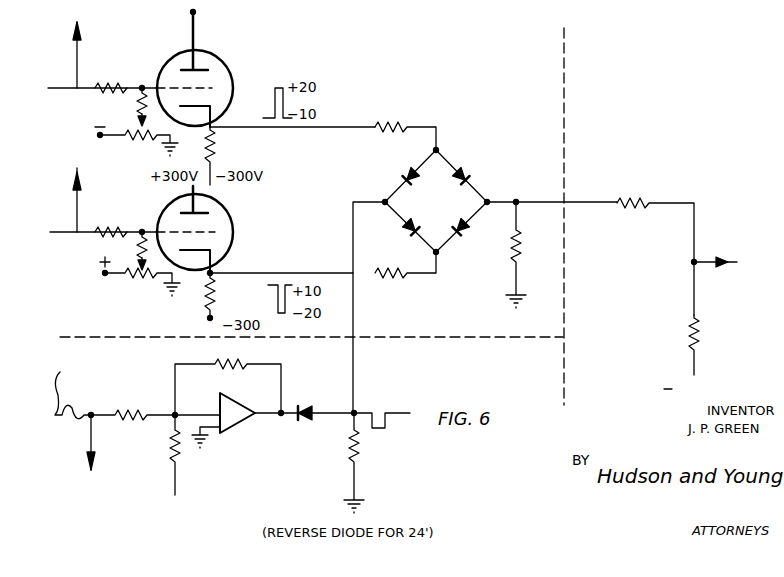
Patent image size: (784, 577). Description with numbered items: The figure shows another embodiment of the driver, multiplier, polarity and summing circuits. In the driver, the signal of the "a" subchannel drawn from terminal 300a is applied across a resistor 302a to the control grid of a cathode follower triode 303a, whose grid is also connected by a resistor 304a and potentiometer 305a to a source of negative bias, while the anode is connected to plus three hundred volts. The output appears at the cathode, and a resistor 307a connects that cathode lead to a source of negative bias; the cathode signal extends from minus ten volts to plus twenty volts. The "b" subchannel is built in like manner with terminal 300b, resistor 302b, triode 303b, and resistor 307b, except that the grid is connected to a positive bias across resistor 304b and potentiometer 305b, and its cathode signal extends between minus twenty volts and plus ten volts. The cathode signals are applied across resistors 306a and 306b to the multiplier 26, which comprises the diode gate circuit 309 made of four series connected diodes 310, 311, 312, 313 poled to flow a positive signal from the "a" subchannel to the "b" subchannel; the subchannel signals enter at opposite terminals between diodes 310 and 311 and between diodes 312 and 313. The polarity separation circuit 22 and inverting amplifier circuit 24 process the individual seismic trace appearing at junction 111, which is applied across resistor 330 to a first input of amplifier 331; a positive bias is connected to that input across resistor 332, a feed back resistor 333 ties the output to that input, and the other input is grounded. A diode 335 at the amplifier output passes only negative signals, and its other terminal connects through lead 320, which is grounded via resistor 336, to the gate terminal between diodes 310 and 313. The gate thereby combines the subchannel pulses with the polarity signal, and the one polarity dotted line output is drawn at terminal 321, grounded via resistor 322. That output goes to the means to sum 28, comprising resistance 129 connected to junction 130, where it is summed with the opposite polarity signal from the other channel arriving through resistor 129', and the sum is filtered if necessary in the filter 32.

The terminal 300a is at (80, 88).
The resistor 302a is at (110, 85).
The triode 303a is at (226, 56).
The resistor 304a is at (140, 97).
The potentiometer 305a is at (100, 138).
The resistor 307a is at (217, 146).
The terminal 300b is at (78, 228).
The resistor 302b is at (95, 228).
The triode 303b is at (223, 204).
The resistor 304b is at (140, 246).
The potentiometer 305b is at (140, 280).
The resistor 307b is at (207, 310).
The multiplier 26 is at (467, 57).
The resistor 306a is at (405, 120).
The resistor 306b is at (408, 275).
The diode gate circuit 309 is at (450, 200).
The diode 310 is at (404, 170).
The diode 311 is at (466, 168).
The diode 312 is at (467, 232).
The diode 313 is at (403, 232).
The lead 320 is at (356, 306).
The output terminal 321 is at (516, 200).
The resistor 322 is at (512, 265).
The means to sum 28 is at (660, 98).
The resistance 129 is at (637, 246).
The junction 130 is at (688, 262).
The filter 32 is at (724, 262).
The resistor 129' is at (718, 345).
The junction 111 is at (98, 420).
The resistor 330 is at (128, 410).
The amplifier 331 is at (248, 428).
The resistor 332 is at (187, 462).
The feed back resistor 333 is at (236, 372).
The diode 335 is at (306, 405).
The resistor 336 is at (364, 446).
The polarity separation circuit 22 is at (302, 505).
The inverting amplifier circuit 24 is at (281, 512).